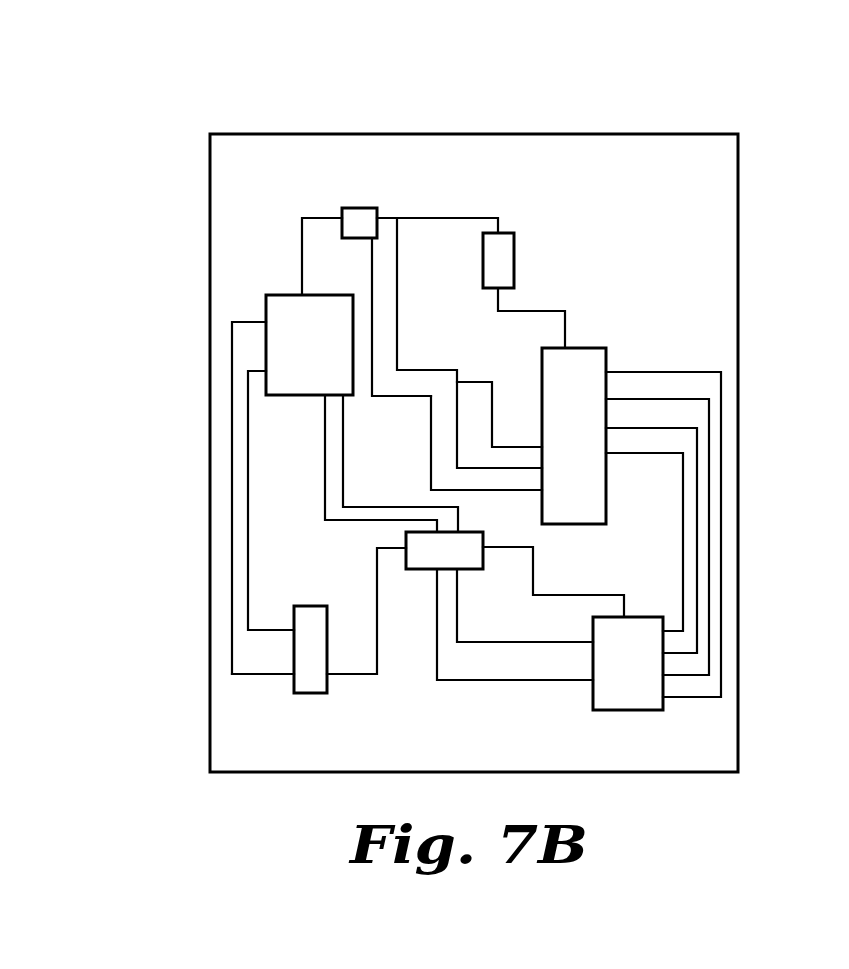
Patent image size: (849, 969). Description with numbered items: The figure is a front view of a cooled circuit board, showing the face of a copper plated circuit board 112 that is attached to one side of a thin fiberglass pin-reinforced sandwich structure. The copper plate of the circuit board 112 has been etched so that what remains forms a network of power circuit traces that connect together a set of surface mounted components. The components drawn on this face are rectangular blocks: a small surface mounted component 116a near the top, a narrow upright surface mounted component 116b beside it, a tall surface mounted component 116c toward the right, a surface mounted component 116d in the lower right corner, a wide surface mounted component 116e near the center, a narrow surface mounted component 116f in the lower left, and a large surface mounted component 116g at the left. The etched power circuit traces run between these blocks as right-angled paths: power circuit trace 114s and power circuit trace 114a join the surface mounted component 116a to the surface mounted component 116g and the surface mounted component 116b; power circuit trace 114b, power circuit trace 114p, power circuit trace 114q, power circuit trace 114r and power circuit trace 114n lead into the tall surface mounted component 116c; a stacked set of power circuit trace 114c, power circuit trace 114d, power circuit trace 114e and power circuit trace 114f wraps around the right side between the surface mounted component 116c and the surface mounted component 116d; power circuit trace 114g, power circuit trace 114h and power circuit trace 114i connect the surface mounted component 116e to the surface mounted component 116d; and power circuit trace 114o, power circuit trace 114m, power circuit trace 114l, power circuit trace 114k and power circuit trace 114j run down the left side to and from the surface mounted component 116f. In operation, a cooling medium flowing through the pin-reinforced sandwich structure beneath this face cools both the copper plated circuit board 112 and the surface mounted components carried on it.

The copper plated circuit board 112 is at (628, 168).
The power circuit trace 114a is at (441, 217).
The power circuit trace 114b is at (566, 325).
The power circuit trace 114c is at (721, 384).
The power circuit trace 114d is at (709, 455).
The power circuit trace 114e is at (697, 527).
The power circuit trace 114f is at (683, 583).
The power circuit trace 114g is at (503, 681).
The power circuit trace 114h is at (487, 642).
The power circuit trace 114i is at (581, 595).
The power circuit trace 114j is at (352, 676).
The power circuit trace 114k is at (273, 676).
The power circuit trace 114l is at (248, 545).
The power circuit trace 114m is at (232, 500).
The power circuit trace 114n is at (431, 462).
The power circuit trace 114o is at (344, 420).
The power circuit trace 114p is at (477, 382).
The power circuit trace 114q is at (398, 324).
The power circuit trace 114r is at (372, 284).
The power circuit trace 114s is at (302, 255).
The surface mounted component 116a is at (357, 222).
The surface mounted component 116b is at (496, 275).
The surface mounted component 116c is at (600, 360).
The surface mounted component 116d is at (650, 712).
The surface mounted component 116e is at (407, 536).
The surface mounted component 116f is at (310, 630).
The surface mounted component 116g is at (266, 306).